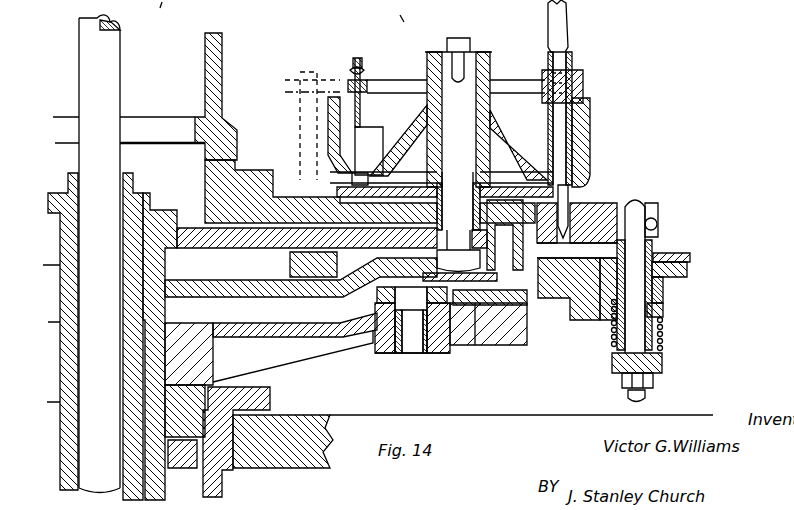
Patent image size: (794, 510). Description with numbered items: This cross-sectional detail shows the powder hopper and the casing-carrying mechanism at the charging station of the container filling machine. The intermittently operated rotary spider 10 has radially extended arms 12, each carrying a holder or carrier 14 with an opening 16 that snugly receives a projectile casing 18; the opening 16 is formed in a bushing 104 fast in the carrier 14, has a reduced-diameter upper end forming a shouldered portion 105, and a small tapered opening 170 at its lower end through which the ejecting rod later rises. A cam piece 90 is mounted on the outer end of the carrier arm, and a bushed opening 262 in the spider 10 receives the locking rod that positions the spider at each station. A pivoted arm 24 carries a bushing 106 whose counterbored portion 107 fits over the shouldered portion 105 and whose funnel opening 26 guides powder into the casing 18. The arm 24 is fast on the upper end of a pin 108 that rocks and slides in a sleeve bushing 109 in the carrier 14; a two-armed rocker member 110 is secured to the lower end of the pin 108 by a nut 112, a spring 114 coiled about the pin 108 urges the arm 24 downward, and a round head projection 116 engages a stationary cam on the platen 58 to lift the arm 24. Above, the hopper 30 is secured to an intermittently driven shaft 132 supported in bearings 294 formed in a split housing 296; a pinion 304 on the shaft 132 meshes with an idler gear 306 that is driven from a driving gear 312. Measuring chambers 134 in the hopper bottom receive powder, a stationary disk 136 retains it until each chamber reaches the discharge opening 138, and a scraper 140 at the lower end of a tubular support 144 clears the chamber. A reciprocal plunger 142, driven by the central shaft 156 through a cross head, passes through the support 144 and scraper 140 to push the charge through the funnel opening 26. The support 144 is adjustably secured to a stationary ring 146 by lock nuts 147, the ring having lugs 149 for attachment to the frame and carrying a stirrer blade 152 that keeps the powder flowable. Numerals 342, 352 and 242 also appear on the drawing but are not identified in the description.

The central shaft 156 is at (105, 85).
The column 342 is at (250, 4).
The upper member 352 is at (143, 6).
The upper member 242 is at (403, 11).
The driving gear 312 is at (178, 250).
The platen 58 is at (310, 415).
The stationary disk 136 is at (340, 188).
The discharge opening 138 is at (590, 190).
The measuring chambers 134 is at (263, 173).
The pivoted arm 24 is at (458, 222).
The idler gear 306 is at (243, 252).
The pinion 304 is at (395, 265).
The projectile casing 18 is at (482, 278).
The split housing 296 is at (243, 288).
The rotary spider 10 is at (293, 356).
The bearings 294 is at (445, 355).
The bushed openings 262 is at (408, 355).
The radially extended arms 12 is at (475, 347).
The carrier 14 is at (505, 346).
The funnel opening 26 is at (583, 209).
The shouldered portion 105 is at (648, 249).
The tapered opening 170 is at (585, 322).
The opening 16 is at (607, 298).
The bushing 106 is at (640, 200).
The counterbored portion 107 is at (660, 212).
The cam piece 90 is at (683, 255).
The sleeve bushing 109 is at (660, 288).
The pin 108 is at (660, 315).
The spring 114 is at (663, 333).
The rocker member 110 is at (668, 357).
The bushing 104 is at (618, 360).
The nut 112 is at (626, 385).
The round head projection 116 is at (645, 400).
The driven shaft 132 is at (468, 60).
The hopper 30 is at (328, 125).
The stirrer blade 152 is at (375, 128).
The lugs 149 is at (287, 83).
The plunger 142 is at (567, 30).
The scraper 140 is at (570, 138).
The lock nuts 147 is at (542, 76).
The stationary ring 146 is at (583, 86).
The tubular support 144 is at (593, 123).